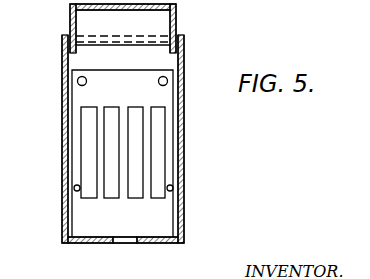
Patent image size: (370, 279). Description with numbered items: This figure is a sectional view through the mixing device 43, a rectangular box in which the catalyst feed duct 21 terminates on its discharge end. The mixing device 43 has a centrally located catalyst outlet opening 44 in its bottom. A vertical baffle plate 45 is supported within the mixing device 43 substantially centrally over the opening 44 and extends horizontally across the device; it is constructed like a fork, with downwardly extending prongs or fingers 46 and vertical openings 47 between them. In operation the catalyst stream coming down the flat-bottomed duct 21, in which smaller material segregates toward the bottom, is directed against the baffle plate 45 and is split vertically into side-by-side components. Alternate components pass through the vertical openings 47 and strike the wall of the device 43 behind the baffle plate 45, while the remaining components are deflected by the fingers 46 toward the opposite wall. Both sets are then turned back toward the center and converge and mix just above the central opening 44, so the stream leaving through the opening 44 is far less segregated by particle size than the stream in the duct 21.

The catalyst feed duct 21 is at (177, 19).
The mixing device 43 is at (184, 73).
The catalyst outlet opening 44 is at (123, 246).
The baffle plate 45 is at (80, 97).
The fingers 46 is at (80, 80).
The vertical openings 47 is at (109, 184).